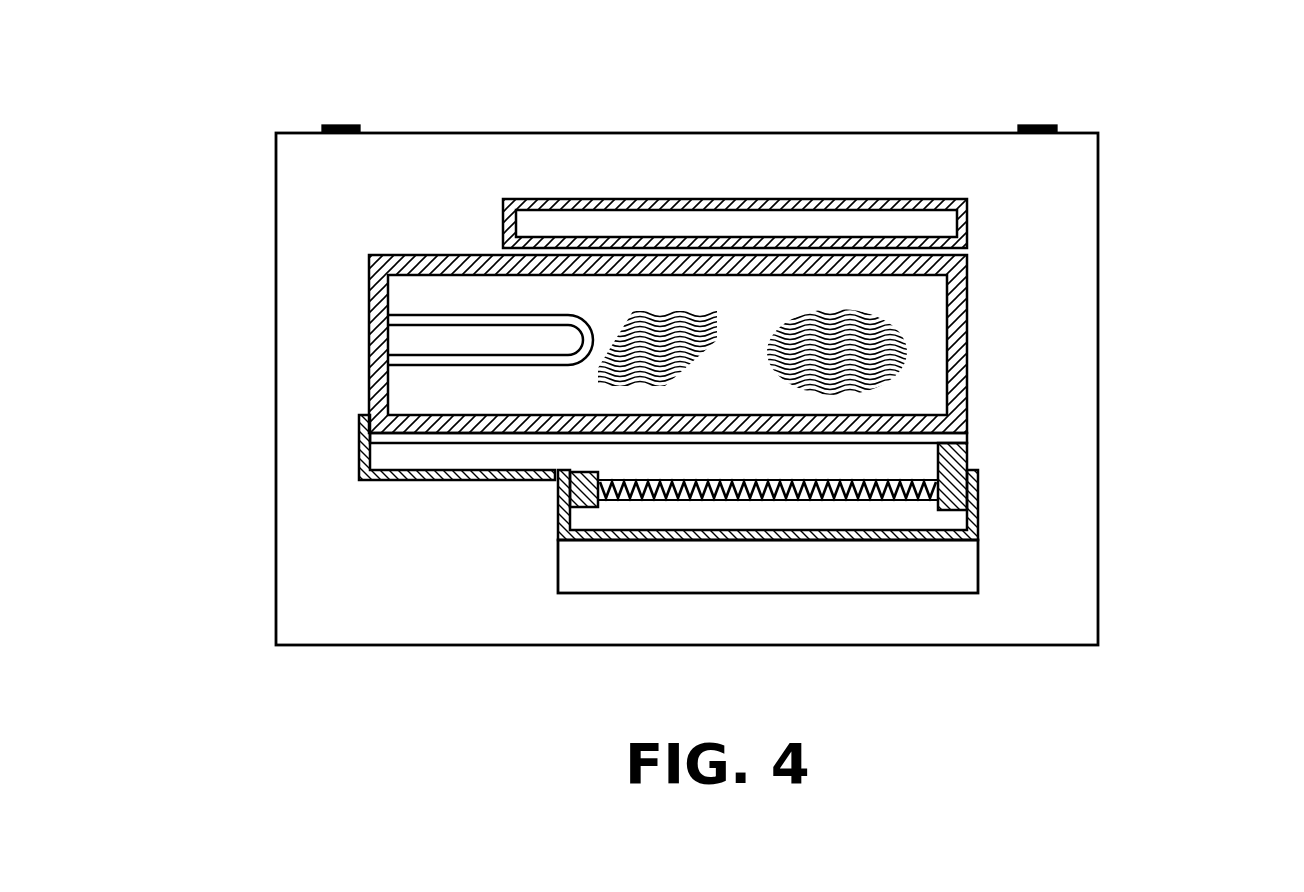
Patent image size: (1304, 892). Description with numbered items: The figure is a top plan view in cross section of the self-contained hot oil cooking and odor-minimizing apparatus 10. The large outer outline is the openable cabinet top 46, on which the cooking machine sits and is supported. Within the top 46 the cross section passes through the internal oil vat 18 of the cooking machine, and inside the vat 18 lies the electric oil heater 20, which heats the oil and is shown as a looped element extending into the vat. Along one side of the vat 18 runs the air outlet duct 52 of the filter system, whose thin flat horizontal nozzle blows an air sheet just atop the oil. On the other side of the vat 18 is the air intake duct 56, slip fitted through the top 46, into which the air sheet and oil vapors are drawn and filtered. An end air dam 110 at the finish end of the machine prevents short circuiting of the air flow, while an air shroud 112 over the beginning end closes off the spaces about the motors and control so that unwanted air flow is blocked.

The apparatus 10 is at (1150, 705).
The vat 18 is at (375, 280).
The electric oil heater 20 is at (455, 320).
The cabinet top 46 is at (462, 158).
The air outlet duct 52 is at (818, 200).
The air intake duct 56 is at (863, 572).
The end air dam 110 is at (967, 453).
The air shroud 112 is at (420, 480).